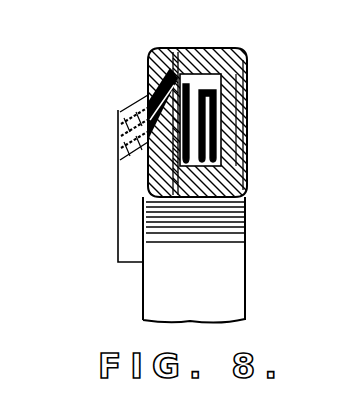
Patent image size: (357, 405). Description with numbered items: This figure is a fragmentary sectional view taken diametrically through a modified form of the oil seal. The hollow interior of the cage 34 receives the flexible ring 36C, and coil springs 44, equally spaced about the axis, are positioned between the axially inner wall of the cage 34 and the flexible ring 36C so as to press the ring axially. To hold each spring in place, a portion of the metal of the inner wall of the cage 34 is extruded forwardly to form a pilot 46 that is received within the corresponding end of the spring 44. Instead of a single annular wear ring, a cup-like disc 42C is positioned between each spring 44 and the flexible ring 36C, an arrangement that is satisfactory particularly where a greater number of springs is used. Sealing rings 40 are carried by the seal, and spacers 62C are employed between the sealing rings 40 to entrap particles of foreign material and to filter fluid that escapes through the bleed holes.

The cage 34 is at (248, 54).
The flexible ring 36C is at (175, 70).
The sealing rings 40 is at (120, 118).
The cup-like disc 42C is at (183, 74).
The coil springs 44 is at (246, 82).
The pilot 46 is at (237, 118).
The spacers 62C is at (120, 143).